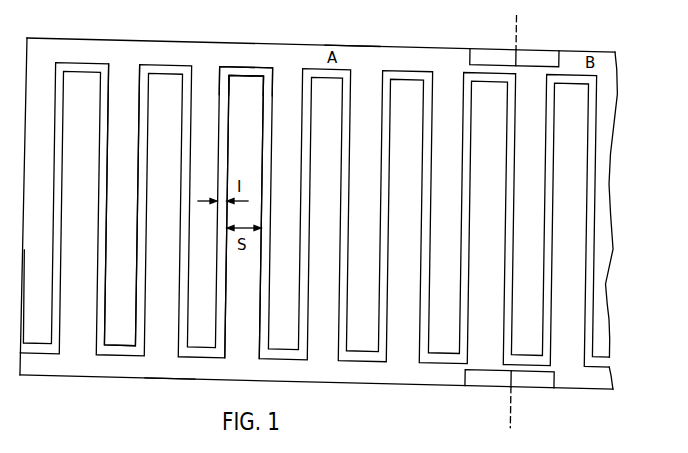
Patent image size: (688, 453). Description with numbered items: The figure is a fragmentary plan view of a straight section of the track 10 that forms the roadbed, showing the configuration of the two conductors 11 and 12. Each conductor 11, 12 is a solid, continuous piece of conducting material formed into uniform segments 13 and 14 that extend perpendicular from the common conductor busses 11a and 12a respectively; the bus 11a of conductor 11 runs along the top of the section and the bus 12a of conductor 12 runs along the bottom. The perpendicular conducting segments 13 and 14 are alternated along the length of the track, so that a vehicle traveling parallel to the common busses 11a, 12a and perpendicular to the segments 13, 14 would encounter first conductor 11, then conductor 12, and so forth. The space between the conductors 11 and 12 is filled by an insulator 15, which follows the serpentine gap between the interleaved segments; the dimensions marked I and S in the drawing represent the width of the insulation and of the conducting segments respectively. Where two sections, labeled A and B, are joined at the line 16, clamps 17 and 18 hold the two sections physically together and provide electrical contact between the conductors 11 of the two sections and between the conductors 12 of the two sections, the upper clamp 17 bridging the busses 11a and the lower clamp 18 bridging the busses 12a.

The straight section of the track 10 is at (636, 167).
The conductor 11 is at (410, 50).
The common conductor bus 11a is at (350, 59).
The conductor 12 is at (140, 376).
The common conductor bus 12a is at (170, 367).
The conducting segment 13 is at (118, 93).
The conducting segment 14 is at (240, 330).
The insulator 15 is at (245, 72).
The line 16 is at (508, 403).
The clamp 17 is at (514, 42).
The clamp 18 is at (482, 382).